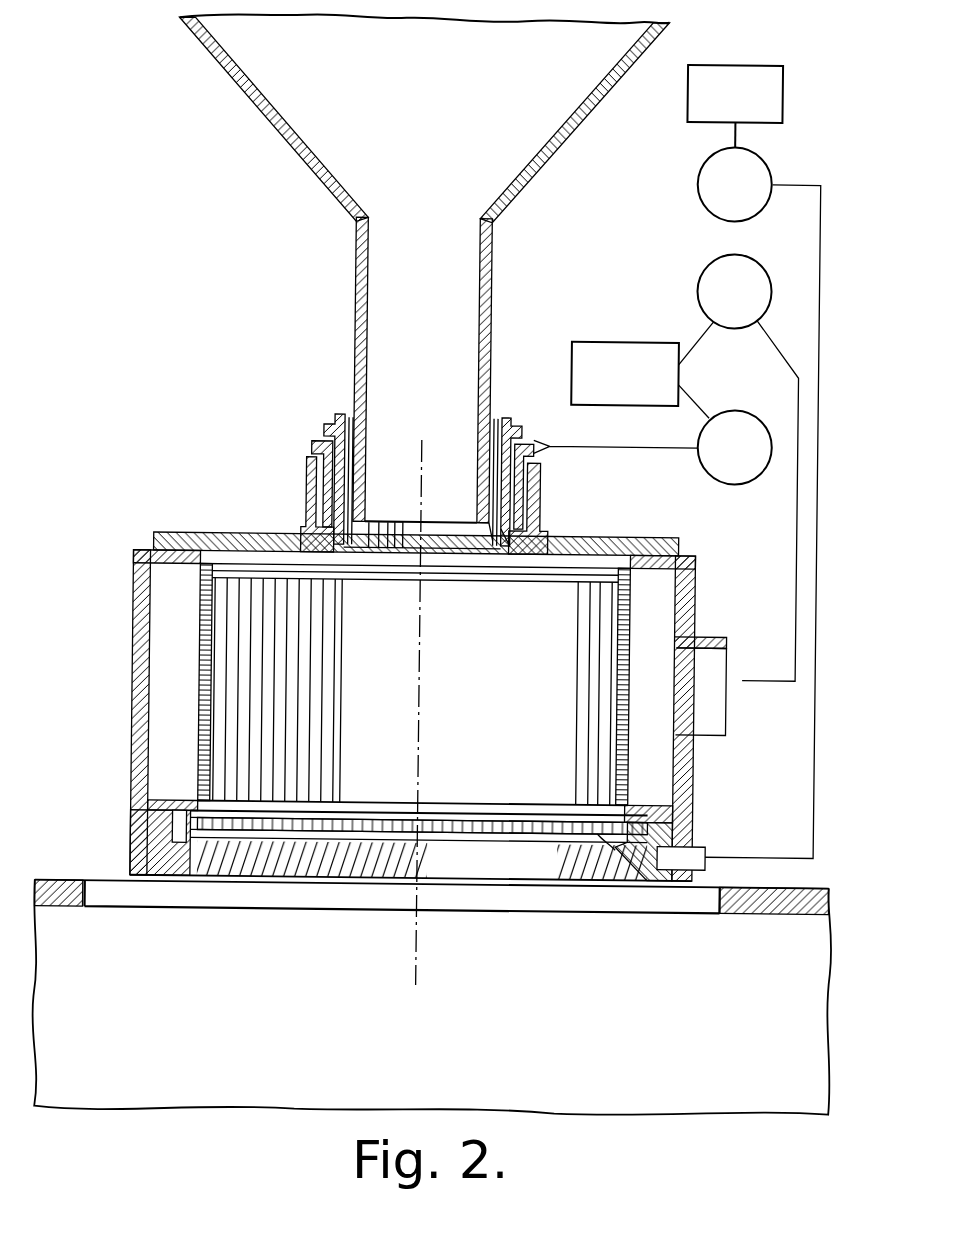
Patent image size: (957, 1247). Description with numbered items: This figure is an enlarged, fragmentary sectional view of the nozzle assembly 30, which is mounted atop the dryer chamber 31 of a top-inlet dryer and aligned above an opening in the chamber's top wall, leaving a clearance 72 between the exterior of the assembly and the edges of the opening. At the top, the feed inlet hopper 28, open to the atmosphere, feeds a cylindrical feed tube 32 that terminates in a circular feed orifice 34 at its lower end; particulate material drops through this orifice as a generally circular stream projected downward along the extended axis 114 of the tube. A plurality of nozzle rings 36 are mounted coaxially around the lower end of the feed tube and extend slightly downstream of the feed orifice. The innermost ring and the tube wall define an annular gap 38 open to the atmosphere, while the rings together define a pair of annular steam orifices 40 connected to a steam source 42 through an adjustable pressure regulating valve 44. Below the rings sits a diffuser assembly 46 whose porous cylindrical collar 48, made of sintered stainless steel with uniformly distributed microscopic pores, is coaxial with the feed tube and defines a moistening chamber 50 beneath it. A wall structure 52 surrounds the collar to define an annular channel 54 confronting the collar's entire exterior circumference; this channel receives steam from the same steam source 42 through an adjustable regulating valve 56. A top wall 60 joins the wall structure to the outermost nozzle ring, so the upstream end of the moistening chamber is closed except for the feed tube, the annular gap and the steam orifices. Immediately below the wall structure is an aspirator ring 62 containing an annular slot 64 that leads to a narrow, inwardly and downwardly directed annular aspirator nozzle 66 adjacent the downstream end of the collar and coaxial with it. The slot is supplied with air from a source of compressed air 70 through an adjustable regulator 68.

The feed inlet hopper 28 is at (284, 152).
The nozzle assembly 30 is at (172, 485).
The dryer chamber 31 is at (46, 1001).
The feed tube 32 is at (342, 306).
The feed orifice 34 is at (398, 549).
The nozzle rings 36 is at (546, 482).
The annular gap 38 is at (488, 549).
The annular steam orifices 40 is at (505, 549).
The steam source 42 is at (574, 340).
The adjustable pressure regulating valve 44 is at (706, 471).
The diffuser assembly 46 is at (414, 715).
The porous cylindrical collar 48 is at (625, 733).
The moistening chamber 50 is at (362, 797).
The wall structure 52 is at (136, 619).
The annular channel 54 is at (166, 663).
The adjustable regulating valve 56 is at (695, 277).
The top wall 60 is at (231, 535).
The aspirator ring 62 is at (640, 882).
The annular slot 64 is at (665, 882).
The annular aspirator nozzle 66 is at (590, 836).
The adjustable regulator 68 is at (694, 193).
The compressed air source 70 is at (682, 118).
The clearance 72 is at (120, 882).
The extended axis 114 is at (420, 728).